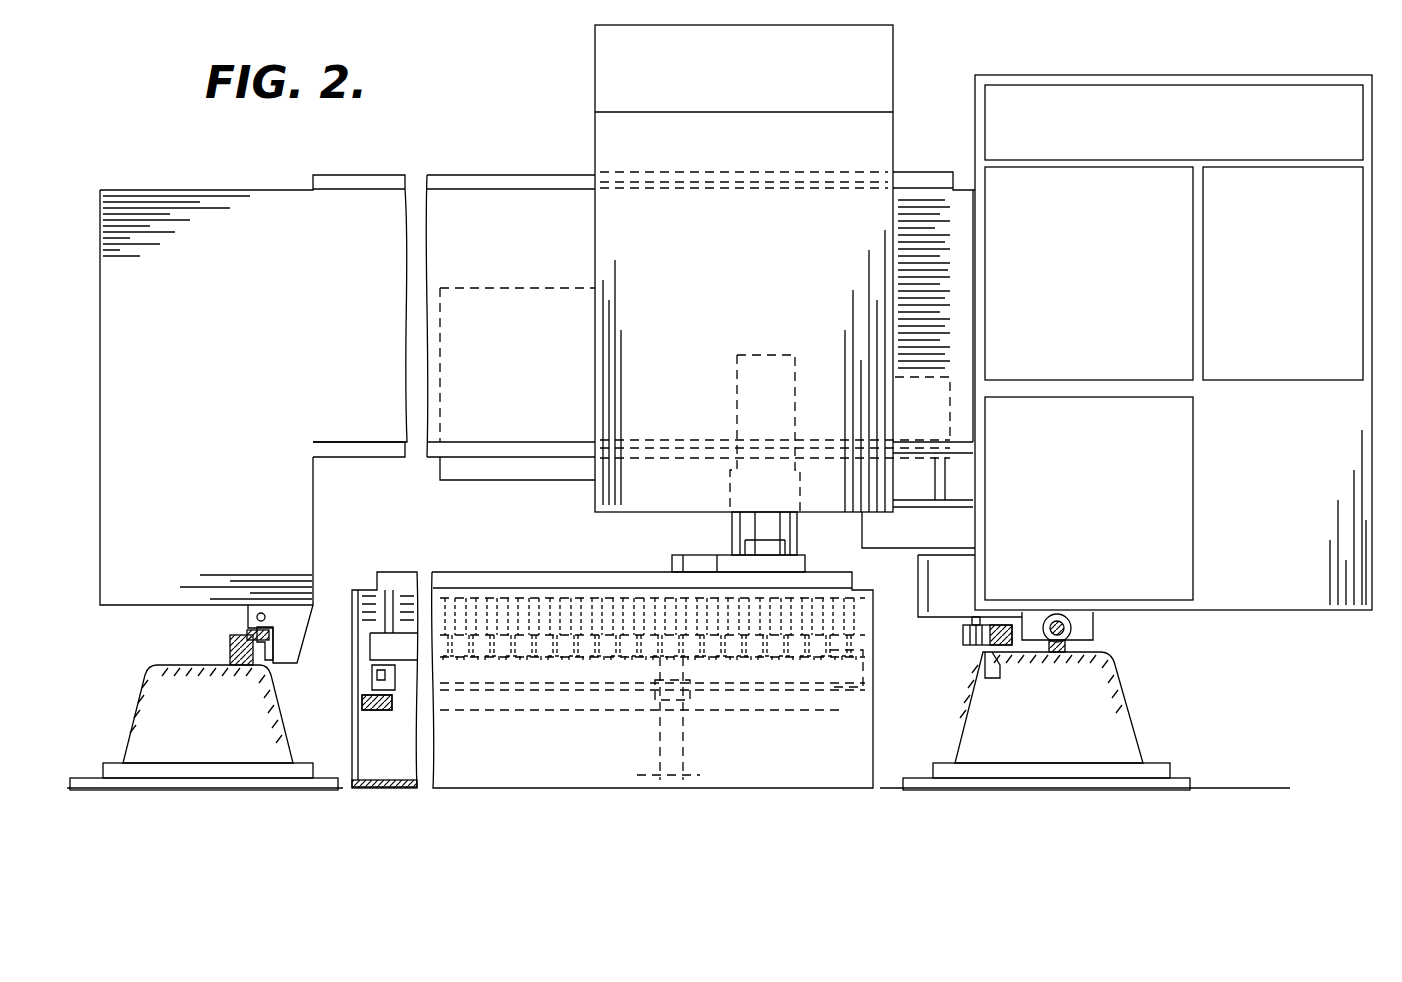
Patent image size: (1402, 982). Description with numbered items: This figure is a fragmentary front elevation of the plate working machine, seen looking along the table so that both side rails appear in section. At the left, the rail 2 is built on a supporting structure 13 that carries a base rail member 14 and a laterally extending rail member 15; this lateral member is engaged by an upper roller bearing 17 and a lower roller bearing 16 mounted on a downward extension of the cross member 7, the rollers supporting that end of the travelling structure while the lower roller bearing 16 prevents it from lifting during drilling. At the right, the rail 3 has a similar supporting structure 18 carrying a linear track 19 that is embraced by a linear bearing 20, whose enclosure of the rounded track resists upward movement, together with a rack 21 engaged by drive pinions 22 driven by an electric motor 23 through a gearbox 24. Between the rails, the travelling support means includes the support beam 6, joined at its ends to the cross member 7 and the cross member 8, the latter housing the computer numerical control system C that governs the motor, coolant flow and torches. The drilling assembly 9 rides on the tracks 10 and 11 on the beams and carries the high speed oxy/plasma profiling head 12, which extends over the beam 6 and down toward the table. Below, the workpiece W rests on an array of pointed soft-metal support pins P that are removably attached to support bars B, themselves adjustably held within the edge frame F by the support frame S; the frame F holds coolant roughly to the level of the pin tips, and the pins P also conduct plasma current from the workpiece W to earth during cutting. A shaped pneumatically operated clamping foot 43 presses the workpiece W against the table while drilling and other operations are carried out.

The rail 2 is at (133, 729).
The rail 3 is at (1145, 736).
The support beam 6 is at (706, 335).
The cross member 7 is at (253, 419).
The cross member 8 is at (1160, 74).
The drilling assembly 9 is at (593, 50).
The track 10 is at (514, 178).
The track 11 is at (387, 452).
The oxy/plasma profiling head 12 is at (812, 550).
The supporting structure 13 is at (152, 706).
The base rail member 14 is at (229, 652).
The laterally extending rail member 15 is at (247, 632).
The lower roller bearing 16 is at (272, 652).
The upper roller bearing 17 is at (258, 628).
The supporting structure 18 is at (1100, 712).
The linear track 19 is at (1058, 624).
The linear bearing 20 is at (1085, 618).
The rack 21 is at (985, 676).
The drive pinion 22 is at (962, 636).
The electric motor 23 is at (930, 487).
The gearbox 24 is at (960, 580).
The clamping foot 43 is at (670, 562).
The support bar B is at (523, 658).
The computer numerical control system C is at (1283, 243).
The edge frame F is at (652, 689).
The support pin P is at (385, 595).
The support frame S is at (397, 680).
The workpiece W is at (503, 588).